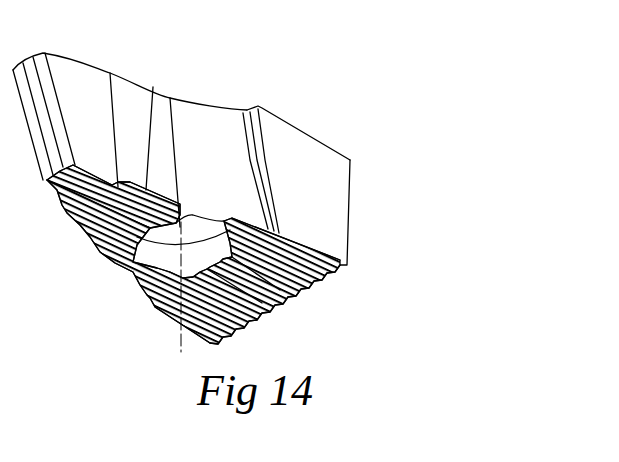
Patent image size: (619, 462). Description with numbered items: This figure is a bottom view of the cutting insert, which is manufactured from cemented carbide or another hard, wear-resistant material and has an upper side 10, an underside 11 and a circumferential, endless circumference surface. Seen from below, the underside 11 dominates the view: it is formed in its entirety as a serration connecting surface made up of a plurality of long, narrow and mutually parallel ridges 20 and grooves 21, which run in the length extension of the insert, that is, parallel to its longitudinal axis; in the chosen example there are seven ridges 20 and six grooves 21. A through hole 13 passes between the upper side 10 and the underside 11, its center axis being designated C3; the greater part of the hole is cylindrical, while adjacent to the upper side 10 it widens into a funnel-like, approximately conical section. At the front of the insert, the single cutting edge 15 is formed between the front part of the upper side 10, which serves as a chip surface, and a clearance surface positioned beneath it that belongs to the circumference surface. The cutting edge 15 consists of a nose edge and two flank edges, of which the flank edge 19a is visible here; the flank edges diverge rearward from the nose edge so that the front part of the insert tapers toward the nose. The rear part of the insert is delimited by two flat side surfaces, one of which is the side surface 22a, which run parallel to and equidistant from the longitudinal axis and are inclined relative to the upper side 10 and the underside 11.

The upper side 10 is at (222, 106).
The flank edge 19a is at (136, 82).
The cutting edge 15 is at (0, 268).
The flat side surface 22a is at (333, 193).
The underside 11 is at (118, 262).
The through hole 13 is at (196, 227).
The ridge 20 is at (268, 307).
The groove 21 is at (302, 286).
The center axis C3 is at (179, 332).